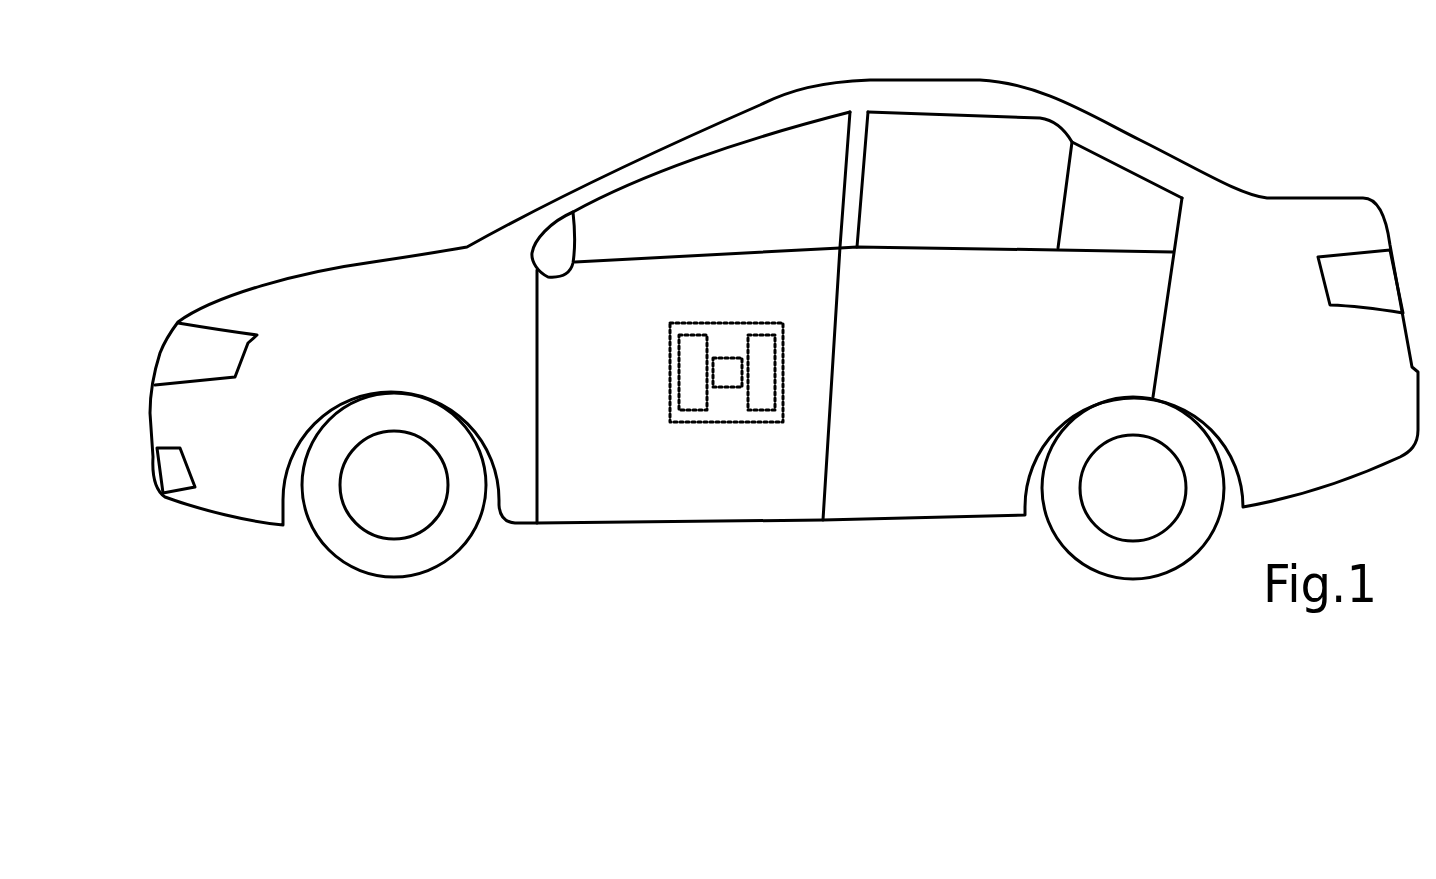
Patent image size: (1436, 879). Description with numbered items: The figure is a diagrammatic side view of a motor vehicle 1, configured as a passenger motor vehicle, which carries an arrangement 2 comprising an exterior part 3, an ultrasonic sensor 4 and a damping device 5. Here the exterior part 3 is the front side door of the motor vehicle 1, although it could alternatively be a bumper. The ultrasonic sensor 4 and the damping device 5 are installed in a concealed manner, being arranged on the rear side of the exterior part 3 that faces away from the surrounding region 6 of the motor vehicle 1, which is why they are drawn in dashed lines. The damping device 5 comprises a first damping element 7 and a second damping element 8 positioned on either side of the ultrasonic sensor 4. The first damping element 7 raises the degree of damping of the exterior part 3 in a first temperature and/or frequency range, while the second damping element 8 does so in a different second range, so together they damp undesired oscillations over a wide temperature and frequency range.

The motor vehicle 1 is at (1072, 108).
The arrangement 2 is at (730, 335).
The exterior part 3 is at (557, 355).
The ultrasonic sensor 4 is at (727, 378).
The damping device 5 is at (730, 372).
The surrounding region 6 is at (482, 166).
The first damping element 7 is at (688, 377).
The second damping element 8 is at (770, 377).